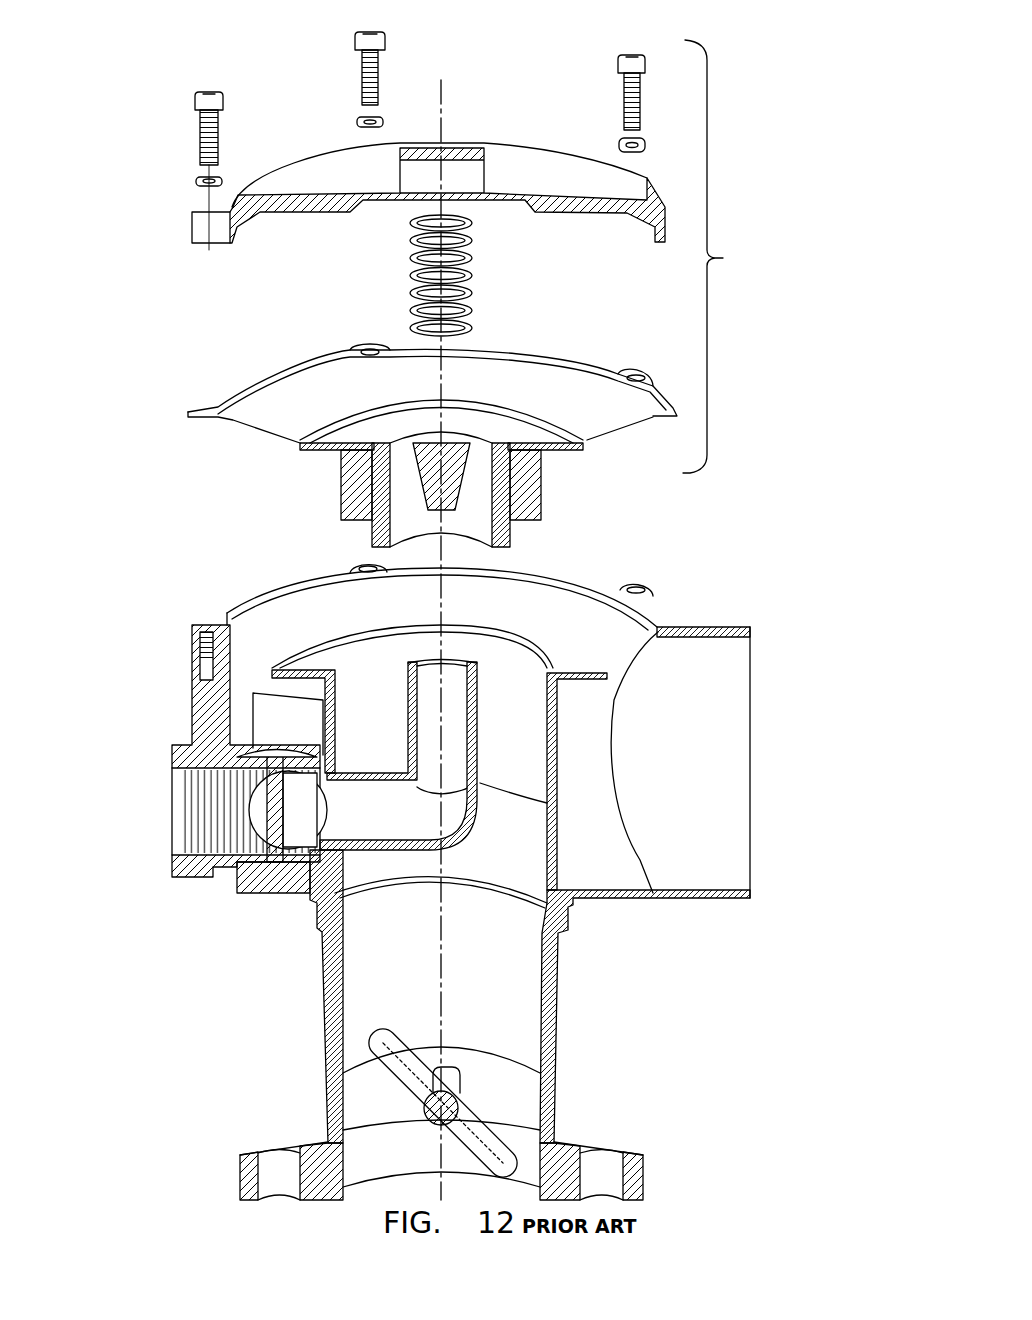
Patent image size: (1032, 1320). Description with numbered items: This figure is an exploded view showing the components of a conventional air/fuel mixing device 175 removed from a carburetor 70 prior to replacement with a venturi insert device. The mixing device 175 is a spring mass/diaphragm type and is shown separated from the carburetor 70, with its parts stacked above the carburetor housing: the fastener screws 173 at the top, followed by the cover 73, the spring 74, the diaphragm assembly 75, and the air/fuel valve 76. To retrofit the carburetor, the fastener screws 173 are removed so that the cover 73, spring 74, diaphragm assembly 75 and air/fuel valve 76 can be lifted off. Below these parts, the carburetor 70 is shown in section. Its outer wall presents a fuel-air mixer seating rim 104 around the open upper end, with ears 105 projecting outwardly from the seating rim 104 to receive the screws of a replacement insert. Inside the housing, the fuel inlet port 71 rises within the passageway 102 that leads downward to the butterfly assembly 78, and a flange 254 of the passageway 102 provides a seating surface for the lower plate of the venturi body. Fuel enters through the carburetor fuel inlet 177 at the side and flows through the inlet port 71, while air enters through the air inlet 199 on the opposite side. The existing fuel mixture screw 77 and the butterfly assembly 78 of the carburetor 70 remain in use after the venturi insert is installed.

The fastener screws 173 is at (200, 137).
The cover 73 is at (510, 160).
The spring 74 is at (472, 272).
The diaphragm assembly 75 is at (535, 384).
The air/fuel valve 76 is at (457, 498).
The mixing device 175 is at (461, 289).
The seating rim 104 is at (243, 602).
The ears 105 is at (362, 563).
The carburetor 70 is at (448, 851).
The flange 254 is at (547, 643).
The fuel inlet port 71 is at (418, 724).
The passageway 102 is at (551, 753).
The carburetor fuel inlet 177 is at (157, 812).
The air inlet 199 is at (717, 831).
The fuel mixture screw 77 is at (266, 895).
The butterfly assembly 78 is at (307, 1022).